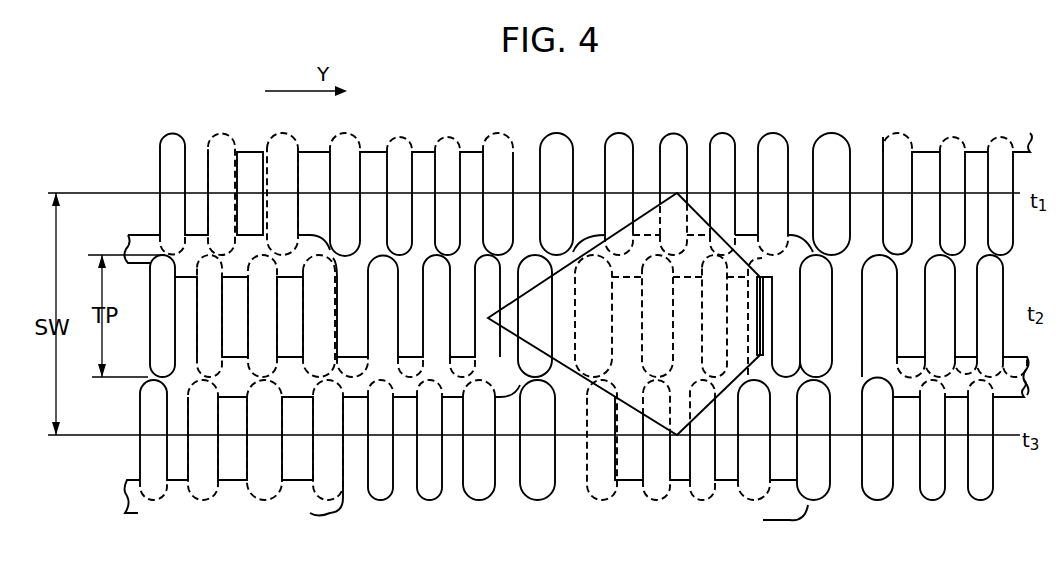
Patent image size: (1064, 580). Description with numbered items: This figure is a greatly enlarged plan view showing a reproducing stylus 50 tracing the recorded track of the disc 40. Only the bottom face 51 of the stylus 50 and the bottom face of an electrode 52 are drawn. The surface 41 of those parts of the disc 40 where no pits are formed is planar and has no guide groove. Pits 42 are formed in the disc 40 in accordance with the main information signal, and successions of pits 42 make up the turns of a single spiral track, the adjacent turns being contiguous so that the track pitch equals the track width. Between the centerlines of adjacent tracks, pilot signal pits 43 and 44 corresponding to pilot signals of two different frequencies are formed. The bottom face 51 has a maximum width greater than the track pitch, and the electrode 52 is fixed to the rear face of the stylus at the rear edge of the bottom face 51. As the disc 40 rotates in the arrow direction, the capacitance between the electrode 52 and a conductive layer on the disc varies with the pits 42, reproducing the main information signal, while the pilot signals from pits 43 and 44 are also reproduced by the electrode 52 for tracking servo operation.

The disc 40 is at (797, 96).
The surface 41 is at (696, 158).
The pits 42 is at (615, 145).
The pilot signal pits 43 is at (143, 240).
The pilot signal pits 44 is at (512, 152).
The reproducing stylus 50 is at (645, 200).
The bottom face 51 is at (596, 253).
The electrode 52 is at (763, 318).